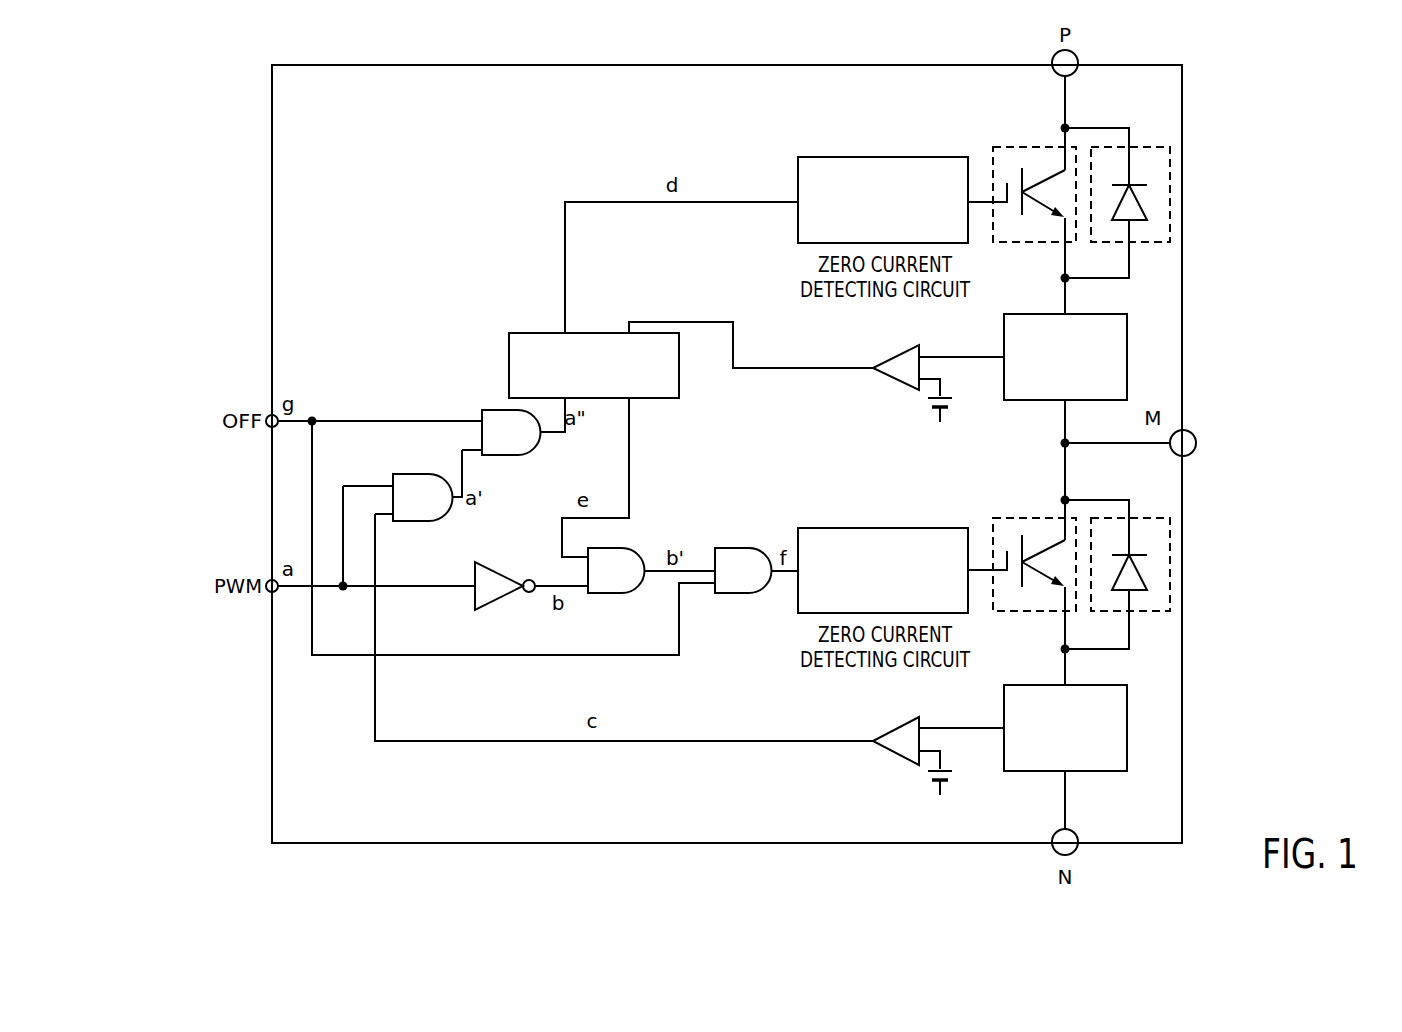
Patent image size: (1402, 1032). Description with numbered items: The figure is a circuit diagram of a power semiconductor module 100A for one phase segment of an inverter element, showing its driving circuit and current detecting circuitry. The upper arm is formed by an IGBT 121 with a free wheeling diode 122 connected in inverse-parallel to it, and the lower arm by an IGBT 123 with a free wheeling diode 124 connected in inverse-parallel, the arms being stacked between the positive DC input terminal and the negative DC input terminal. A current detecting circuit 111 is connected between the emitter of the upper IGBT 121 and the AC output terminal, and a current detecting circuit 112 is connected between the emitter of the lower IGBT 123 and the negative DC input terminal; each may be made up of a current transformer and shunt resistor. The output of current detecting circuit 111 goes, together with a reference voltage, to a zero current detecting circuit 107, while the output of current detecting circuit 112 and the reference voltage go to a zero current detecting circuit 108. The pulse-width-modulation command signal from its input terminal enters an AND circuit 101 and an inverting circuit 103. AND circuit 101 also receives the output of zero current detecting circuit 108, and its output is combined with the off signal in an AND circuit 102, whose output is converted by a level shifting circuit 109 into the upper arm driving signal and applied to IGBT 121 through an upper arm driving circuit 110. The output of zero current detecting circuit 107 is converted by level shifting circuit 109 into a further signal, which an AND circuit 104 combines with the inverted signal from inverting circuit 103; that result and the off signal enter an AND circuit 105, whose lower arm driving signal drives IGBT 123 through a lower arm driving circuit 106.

The power semiconductor module 100A is at (355, 53).
The AND circuit 101 is at (410, 483).
The AND circuit 102 is at (509, 448).
The inverting circuit 103 is at (500, 595).
The AND circuit 104 is at (613, 595).
The AND circuit 105 is at (731, 552).
The lower arm driving circuit 106 is at (927, 537).
The zero current detecting circuit 107 is at (893, 362).
The zero current detecting circuit 108 is at (893, 735).
The level shifting circuit 109 is at (517, 343).
The upper arm driving circuit 110 is at (927, 167).
The current detecting circuit 111 is at (1127, 355).
The current detecting circuit 112 is at (1127, 728).
The IGBT 121 is at (1013, 147).
The free wheeling diode 122 is at (1140, 147).
The IGBT 123 is at (1013, 518).
The free wheeling diode 124 is at (1140, 518).